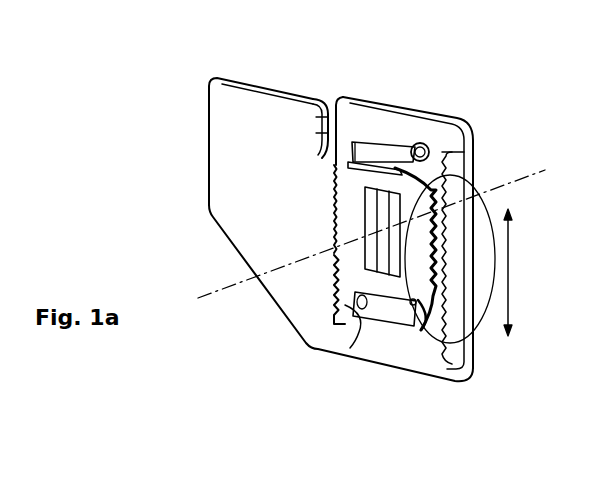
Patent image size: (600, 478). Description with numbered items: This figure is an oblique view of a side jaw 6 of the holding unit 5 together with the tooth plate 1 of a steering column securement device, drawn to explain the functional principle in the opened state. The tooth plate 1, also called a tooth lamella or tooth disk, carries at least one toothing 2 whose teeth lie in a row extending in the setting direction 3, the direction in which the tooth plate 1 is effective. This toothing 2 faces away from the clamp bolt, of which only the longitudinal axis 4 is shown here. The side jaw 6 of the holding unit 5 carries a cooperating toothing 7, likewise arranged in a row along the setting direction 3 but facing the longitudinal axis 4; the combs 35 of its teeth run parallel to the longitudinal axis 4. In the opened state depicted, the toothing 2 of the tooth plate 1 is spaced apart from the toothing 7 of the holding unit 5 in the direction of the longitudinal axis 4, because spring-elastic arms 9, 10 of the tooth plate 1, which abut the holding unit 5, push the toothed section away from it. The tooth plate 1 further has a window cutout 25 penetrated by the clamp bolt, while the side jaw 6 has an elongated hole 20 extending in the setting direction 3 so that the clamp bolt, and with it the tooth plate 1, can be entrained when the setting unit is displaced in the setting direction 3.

The tooth plate 1 is at (352, 258).
The toothing 2 is at (316, 100).
The setting direction 3 is at (509, 258).
The longitudinal axis of the clamp bolt 4 is at (209, 295).
The holding unit 5 is at (261, 73).
The side jaw 6 is at (402, 352).
The toothing 7 is at (348, 318).
The spring-elastic arm 9 is at (385, 147).
The spring-elastic arm 10 is at (372, 312).
The elongated hole 20 is at (400, 205).
The window cutout 25 is at (370, 217).
The combs of the teeth 35 is at (362, 322).